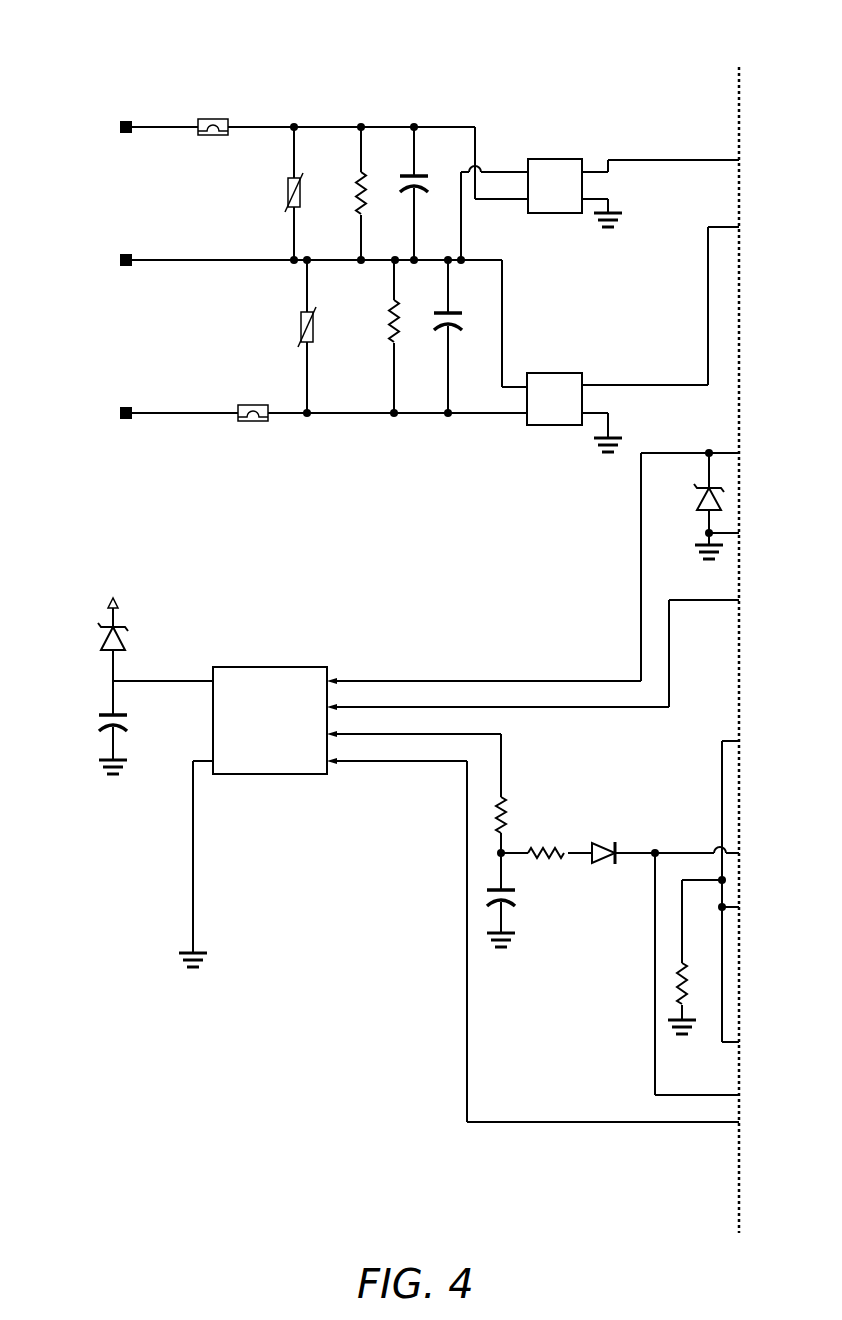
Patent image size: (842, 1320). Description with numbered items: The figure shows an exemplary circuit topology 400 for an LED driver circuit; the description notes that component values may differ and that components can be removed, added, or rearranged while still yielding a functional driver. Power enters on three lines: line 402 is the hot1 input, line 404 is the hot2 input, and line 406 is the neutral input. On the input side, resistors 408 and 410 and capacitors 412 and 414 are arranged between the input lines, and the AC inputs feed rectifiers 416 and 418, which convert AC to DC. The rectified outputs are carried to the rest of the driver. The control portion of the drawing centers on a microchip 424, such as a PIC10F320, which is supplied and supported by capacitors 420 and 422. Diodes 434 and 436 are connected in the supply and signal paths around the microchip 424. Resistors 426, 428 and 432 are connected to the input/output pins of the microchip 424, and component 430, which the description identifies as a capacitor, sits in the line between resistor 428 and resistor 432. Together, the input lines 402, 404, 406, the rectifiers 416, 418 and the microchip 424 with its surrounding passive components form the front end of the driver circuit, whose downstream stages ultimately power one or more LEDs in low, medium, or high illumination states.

The circuit topology 400 is at (660, 52).
The hot1 input line 402 is at (126, 116).
The hot2 input line 404 is at (126, 398).
The neutral input line 406 is at (126, 249).
The resistor 408 is at (346, 179).
The resistor 410 is at (380, 314).
The capacitor 412 is at (394, 179).
The capacitor 414 is at (426, 314).
The rectifier 416 is at (558, 144).
The rectifier 418 is at (571, 364).
The capacitor 420 is at (92, 712).
The capacitor 422 is at (528, 893).
The microchip 424 is at (256, 651).
The resistor 426 is at (522, 814).
The resistor 428 is at (537, 848).
The capacitor 430 is at (613, 848).
The resistor 432 is at (664, 997).
The diode 434 is at (94, 632).
The diode 436 is at (690, 504).